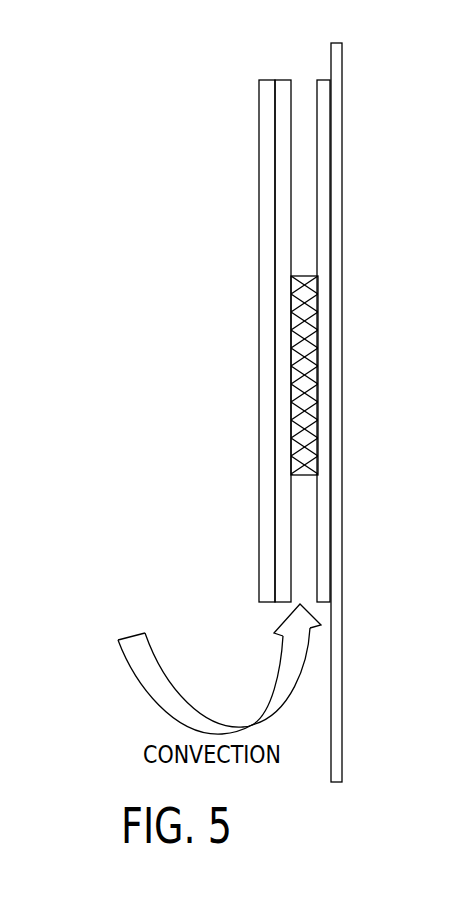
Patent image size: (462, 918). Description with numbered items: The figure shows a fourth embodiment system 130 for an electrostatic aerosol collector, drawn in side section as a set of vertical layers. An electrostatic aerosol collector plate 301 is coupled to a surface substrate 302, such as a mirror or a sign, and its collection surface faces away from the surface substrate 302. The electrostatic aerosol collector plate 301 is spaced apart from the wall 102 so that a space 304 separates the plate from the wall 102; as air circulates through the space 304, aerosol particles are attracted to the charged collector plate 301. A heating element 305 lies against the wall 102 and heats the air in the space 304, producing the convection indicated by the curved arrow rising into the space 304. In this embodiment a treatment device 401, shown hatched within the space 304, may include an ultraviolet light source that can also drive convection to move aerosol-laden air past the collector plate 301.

The fourth embodiment system 130 is at (130, 58).
The electrostatic aerosol collector plate 301 is at (285, 138).
The surface substrate 302 is at (258, 340).
The space 304 is at (302, 240).
The heating element 305 is at (325, 218).
The wall 102 is at (341, 185).
The treatment device 401 is at (310, 355).